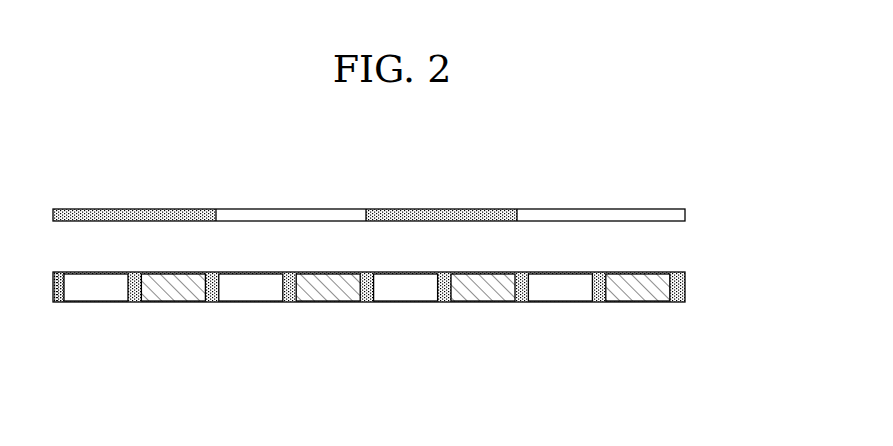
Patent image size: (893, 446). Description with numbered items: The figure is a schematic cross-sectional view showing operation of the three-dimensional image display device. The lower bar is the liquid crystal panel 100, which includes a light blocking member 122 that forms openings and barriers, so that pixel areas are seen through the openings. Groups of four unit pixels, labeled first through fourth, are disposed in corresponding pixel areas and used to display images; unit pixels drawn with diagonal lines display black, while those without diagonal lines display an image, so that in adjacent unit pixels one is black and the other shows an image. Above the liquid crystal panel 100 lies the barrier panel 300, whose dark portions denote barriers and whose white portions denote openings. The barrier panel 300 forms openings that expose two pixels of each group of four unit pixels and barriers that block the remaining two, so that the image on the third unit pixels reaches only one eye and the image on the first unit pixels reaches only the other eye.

The barrier panel 300 is at (685, 215).
The liquid crystal panel 100 is at (400, 317).
The light blocking member 122 is at (55, 303).